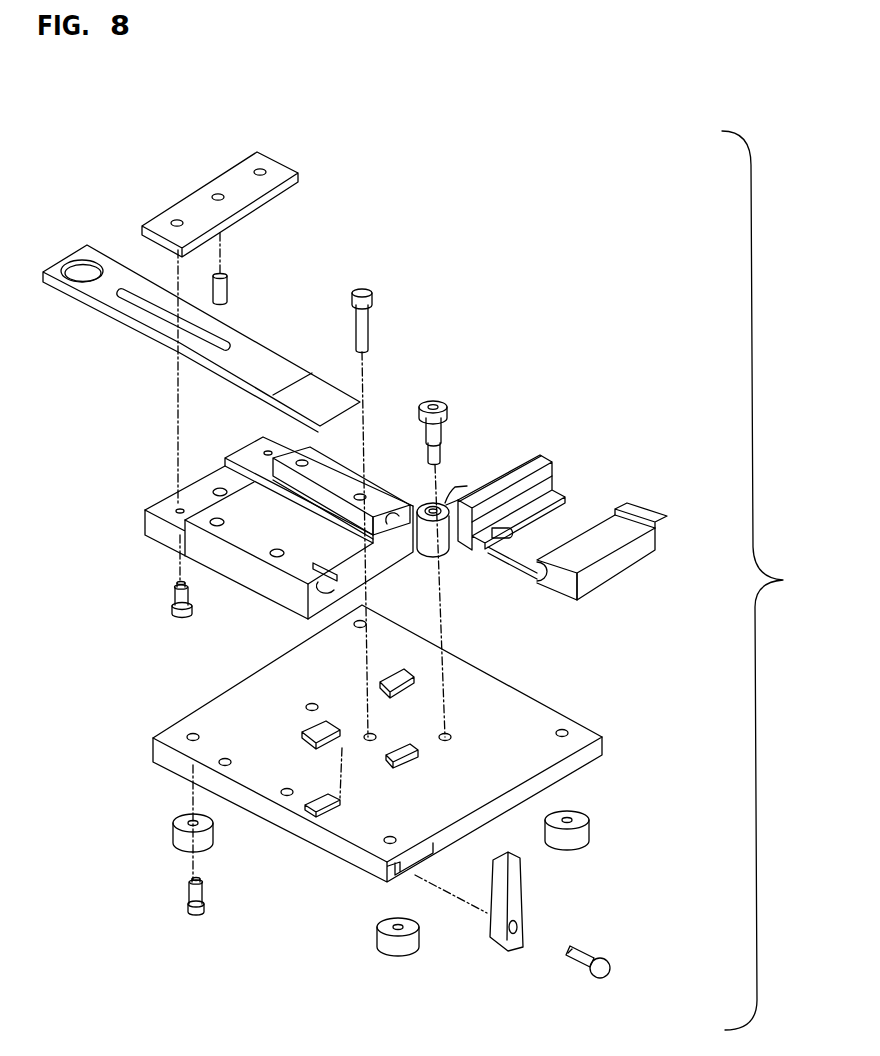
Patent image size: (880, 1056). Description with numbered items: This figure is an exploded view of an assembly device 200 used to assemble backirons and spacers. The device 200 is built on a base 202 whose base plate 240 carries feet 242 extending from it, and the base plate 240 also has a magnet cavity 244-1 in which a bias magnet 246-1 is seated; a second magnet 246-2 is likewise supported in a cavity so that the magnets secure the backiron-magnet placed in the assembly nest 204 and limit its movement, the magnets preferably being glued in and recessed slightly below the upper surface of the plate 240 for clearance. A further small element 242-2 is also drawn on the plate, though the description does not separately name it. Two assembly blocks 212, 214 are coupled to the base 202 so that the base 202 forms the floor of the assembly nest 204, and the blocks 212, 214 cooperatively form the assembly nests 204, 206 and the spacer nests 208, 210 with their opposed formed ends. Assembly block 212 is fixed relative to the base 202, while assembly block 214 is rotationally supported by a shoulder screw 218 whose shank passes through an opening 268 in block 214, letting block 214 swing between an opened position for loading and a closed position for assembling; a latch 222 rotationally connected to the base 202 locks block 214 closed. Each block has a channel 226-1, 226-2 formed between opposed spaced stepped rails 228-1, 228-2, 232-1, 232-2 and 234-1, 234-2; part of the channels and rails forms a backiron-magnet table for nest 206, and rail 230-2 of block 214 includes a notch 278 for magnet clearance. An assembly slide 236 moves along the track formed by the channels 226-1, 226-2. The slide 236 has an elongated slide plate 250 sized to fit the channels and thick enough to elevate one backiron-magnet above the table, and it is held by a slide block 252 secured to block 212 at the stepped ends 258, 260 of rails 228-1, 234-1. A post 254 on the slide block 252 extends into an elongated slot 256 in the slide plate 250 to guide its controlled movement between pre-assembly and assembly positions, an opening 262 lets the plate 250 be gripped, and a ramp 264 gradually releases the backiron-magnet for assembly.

The assembly device 200 is at (773, 580).
The base 202 is at (535, 763).
The assembly nest 204 is at (360, 584).
The assembly nest 206 is at (357, 560).
The spacer nest 208 is at (329, 578).
The spacer nest 210 is at (393, 520).
The assembly block 212 is at (368, 482).
The assembly block 214 is at (534, 487).
The shoulder screw 218 is at (450, 403).
The latch 222 is at (515, 883).
The channel 226-1 is at (297, 519).
The channel 226-2 is at (590, 502).
The stepped rail 228-1 is at (243, 538).
The stepped rail 228-2 is at (645, 520).
The stepped rail 230-2 is at (613, 513).
The stepped rail 232-1 is at (269, 475).
The stepped rail 232-2 is at (568, 485).
The stepped rail 234-1 is at (320, 472).
The stepped rail 234-2 is at (552, 465).
The assembly slide 236 is at (278, 287).
The base plate 240 is at (477, 683).
The feet 242 is at (185, 825).
The stop block 242-2 is at (407, 752).
The magnet cavity 244-1 is at (315, 808).
The magnet 246-1 is at (315, 732).
The magnet 246-2 is at (393, 680).
The slide plate 250 is at (195, 325).
The slide block 252 is at (272, 163).
The post 254 is at (222, 275).
The elongated slot 256 is at (160, 310).
The stepped end 258 is at (156, 500).
The stepped end 260 is at (238, 453).
The opening 262 is at (67, 268).
The ramp 264 is at (328, 397).
The opening 268 is at (455, 487).
The notch 278 is at (501, 532).